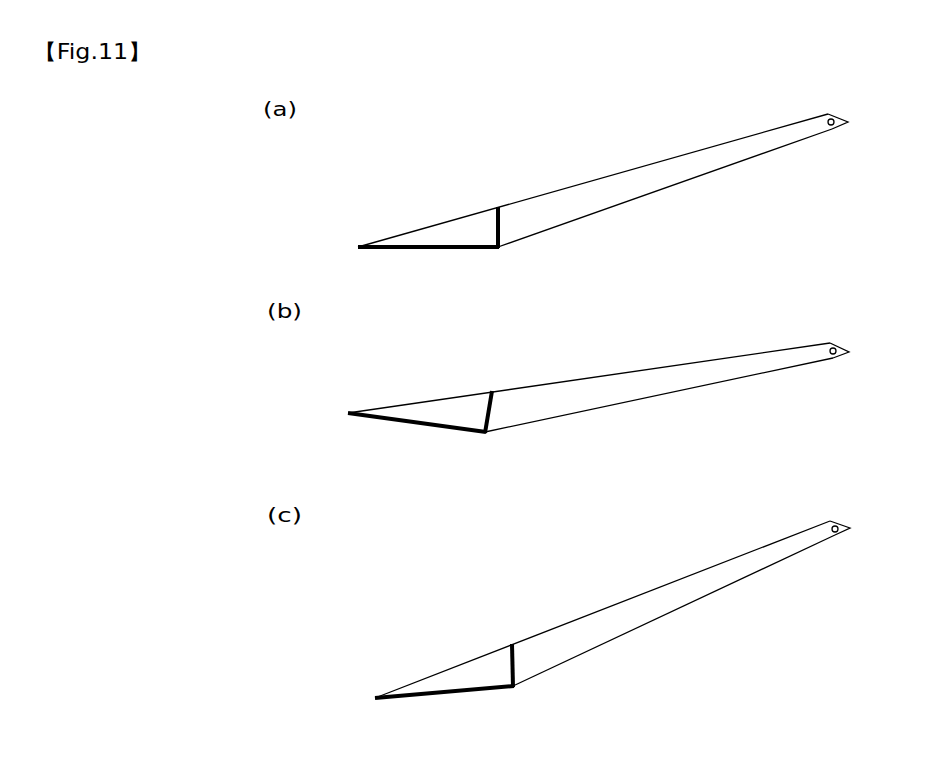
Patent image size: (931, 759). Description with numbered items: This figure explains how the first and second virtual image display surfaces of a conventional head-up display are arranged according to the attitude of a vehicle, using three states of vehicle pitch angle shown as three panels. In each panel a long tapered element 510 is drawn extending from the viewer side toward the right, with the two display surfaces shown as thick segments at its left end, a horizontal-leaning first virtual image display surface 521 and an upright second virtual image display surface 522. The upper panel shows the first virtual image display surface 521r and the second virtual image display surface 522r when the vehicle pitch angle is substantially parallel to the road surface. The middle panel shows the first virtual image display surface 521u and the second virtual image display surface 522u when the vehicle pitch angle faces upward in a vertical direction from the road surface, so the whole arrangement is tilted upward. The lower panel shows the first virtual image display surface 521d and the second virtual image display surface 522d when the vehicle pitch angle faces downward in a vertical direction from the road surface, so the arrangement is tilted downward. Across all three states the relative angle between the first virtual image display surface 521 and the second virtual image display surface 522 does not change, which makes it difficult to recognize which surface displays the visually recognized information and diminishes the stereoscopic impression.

The tube 510 is at (846, 119).
The first virtual image display surface 521 is at (431, 442).
The first virtual image display surface 521r is at (428, 217).
The first virtual image display surface 521u is at (417, 396).
The first virtual image display surface 521d is at (442, 667).
The second virtual image display surface 522 is at (552, 417).
The second virtual image display surface 522r is at (510, 213).
The second virtual image display surface 522u is at (502, 397).
The second virtual image display surface 522d is at (522, 645).